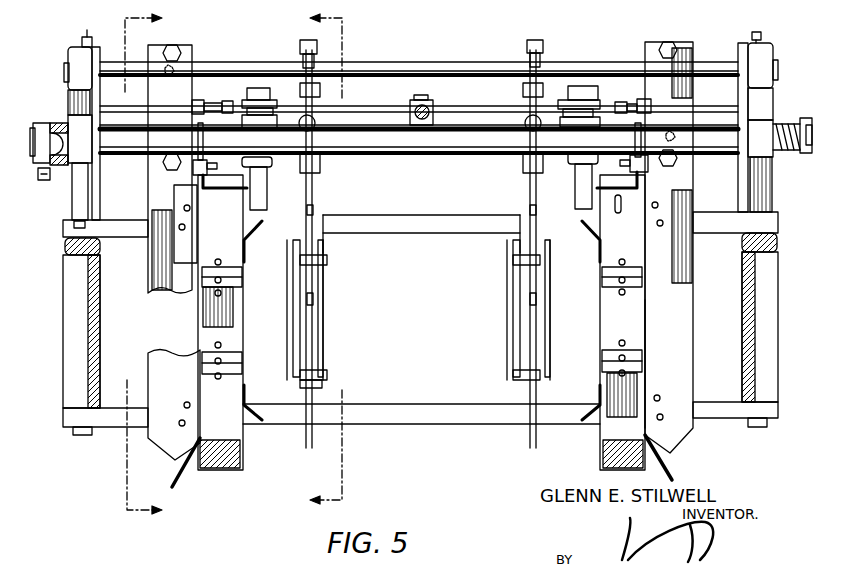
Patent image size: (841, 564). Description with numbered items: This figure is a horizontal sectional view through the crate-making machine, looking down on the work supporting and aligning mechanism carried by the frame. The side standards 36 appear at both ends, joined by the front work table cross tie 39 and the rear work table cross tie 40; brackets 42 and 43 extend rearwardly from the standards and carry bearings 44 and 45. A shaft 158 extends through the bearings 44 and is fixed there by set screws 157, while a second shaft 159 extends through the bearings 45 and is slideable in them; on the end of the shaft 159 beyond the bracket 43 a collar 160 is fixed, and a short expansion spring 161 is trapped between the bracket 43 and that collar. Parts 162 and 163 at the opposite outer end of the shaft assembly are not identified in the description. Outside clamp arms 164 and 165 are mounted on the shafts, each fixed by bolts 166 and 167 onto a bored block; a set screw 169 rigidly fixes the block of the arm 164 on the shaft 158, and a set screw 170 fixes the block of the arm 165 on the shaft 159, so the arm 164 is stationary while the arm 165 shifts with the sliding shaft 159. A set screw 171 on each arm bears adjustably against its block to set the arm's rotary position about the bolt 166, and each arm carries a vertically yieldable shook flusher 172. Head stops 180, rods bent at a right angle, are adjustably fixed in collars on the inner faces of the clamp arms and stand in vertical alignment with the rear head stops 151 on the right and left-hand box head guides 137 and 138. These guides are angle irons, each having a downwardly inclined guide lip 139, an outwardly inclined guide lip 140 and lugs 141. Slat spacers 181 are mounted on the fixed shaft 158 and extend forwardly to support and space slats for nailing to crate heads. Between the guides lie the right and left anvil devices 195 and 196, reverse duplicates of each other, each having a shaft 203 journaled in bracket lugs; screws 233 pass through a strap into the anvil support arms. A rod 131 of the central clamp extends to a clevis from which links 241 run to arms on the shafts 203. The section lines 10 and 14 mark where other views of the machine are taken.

The section line 10 is at (158, 265).
The section line 14 is at (312, 260).
The side standards 36 is at (65, 325).
The front work table cross tie 39 is at (380, 424).
The rear work table cross tie 40 is at (396, 232).
The bracket 42 is at (75, 105).
The bracket 43 is at (768, 103).
The bearings 44 is at (72, 58).
The bearings 45 is at (83, 137).
The rod 131 is at (426, 106).
The right-hand box head guide 137 is at (232, 430).
The left-hand box head guide 138 is at (612, 427).
The downwardly inclined guide lip 139 is at (222, 466).
The outwardly inclined guide lip 140 is at (176, 476).
The lugs 141 is at (205, 288).
The rear head stop 151 is at (227, 195).
The set screws 157 is at (85, 37).
The shaft 158 is at (374, 64).
The shaft 159 is at (376, 156).
The collar 160 is at (806, 155).
The short expansion spring 161 is at (788, 124).
The bolt 162 is at (40, 177).
The plate 163 is at (68, 180).
The outside clamp arm 164 is at (148, 250).
The outside clamp arm 165 is at (693, 270).
The bolt 166 is at (180, 48).
The bolt 167 is at (170, 168).
The set screw 169 is at (165, 80).
The set screw 170 is at (670, 131).
The set screw 171 is at (230, 99).
The shook flusher 172 is at (668, 373).
The head stop 180 is at (246, 228).
The slat spacers 181 is at (320, 280).
The right anvil device 195 is at (320, 197).
The left anvil device 196 is at (522, 197).
The shaft 203 is at (592, 90).
The screws 233 is at (322, 382).
The links 241 is at (375, 112).